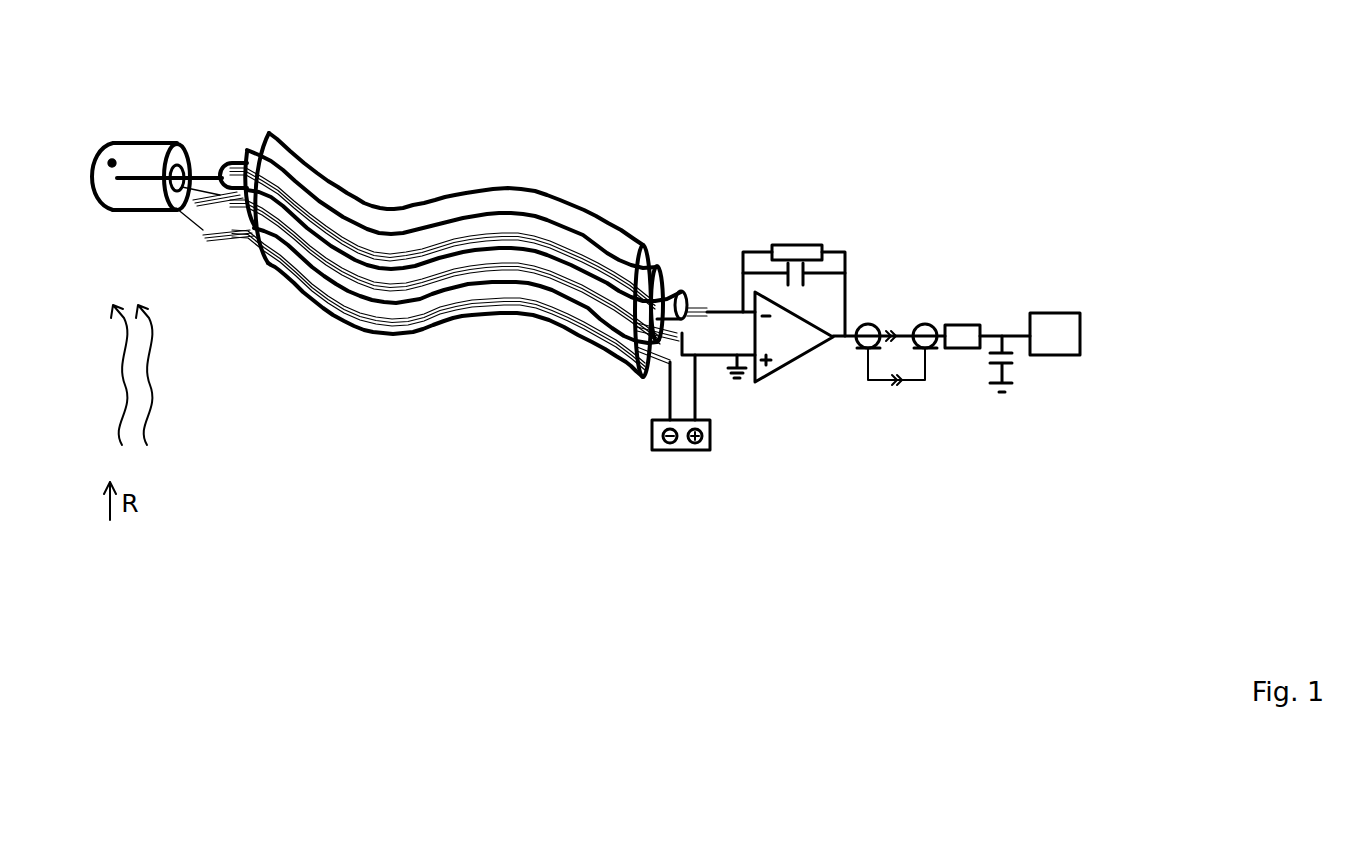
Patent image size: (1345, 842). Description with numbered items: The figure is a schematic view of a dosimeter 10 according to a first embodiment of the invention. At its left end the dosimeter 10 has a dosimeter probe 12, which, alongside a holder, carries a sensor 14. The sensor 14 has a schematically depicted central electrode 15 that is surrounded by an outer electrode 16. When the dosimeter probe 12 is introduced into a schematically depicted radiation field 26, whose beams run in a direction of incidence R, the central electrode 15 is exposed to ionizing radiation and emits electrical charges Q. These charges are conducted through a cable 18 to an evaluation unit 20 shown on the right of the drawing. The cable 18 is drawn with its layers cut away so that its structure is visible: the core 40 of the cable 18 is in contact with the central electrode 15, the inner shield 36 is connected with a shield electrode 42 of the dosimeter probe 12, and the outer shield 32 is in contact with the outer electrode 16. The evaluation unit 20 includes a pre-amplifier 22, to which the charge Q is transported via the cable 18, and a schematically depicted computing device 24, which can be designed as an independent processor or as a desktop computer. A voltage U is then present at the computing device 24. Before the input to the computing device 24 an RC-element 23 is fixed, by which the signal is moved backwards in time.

The dosimeter 10 is at (642, 183).
The dosimeter probe 12 is at (232, 78).
The sensor 14 is at (121, 142).
The central electrode 15 is at (135, 178).
The outer electrode 16 is at (122, 210).
The cable 18 is at (378, 206).
The evaluation unit 20 is at (846, 150).
The pre-amplifier 22 is at (845, 250).
The RC-element 23 is at (955, 283).
The computing device 24 is at (1055, 334).
The radiation field 26 is at (143, 388).
The outer shield 32 is at (433, 312).
The inner shield 36 is at (511, 262).
The core 40 is at (478, 243).
The shield electrode 42 is at (181, 187).